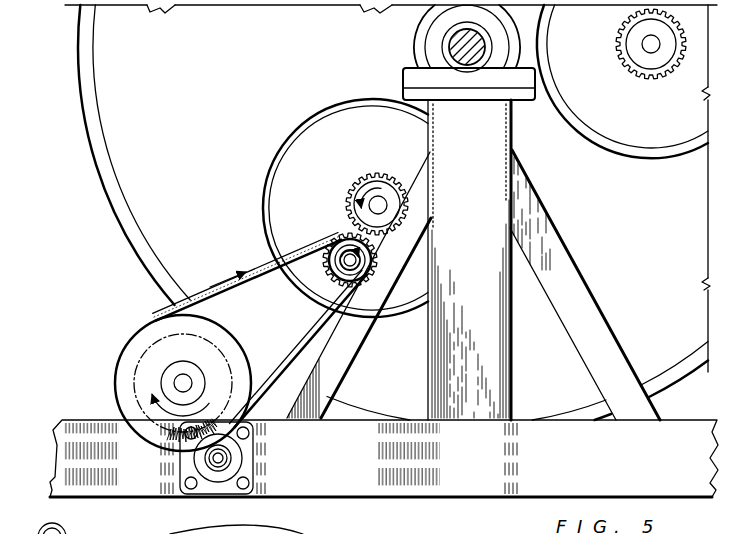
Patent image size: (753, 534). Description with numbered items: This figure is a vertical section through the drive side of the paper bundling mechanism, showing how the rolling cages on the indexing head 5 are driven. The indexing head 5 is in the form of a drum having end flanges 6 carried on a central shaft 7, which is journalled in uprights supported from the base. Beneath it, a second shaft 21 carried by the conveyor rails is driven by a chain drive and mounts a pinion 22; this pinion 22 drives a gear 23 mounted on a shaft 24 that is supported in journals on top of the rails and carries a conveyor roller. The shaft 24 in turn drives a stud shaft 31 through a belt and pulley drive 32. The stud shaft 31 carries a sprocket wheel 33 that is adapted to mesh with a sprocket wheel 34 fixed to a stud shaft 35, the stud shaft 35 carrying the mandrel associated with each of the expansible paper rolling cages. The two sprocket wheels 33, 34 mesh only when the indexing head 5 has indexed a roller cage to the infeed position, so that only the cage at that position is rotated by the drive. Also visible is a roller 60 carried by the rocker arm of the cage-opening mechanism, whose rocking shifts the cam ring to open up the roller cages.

The indexing head 5 is at (75, 113).
The end flanges 6 is at (97, 141).
The central shaft 7 is at (458, 48).
The second shaft 21 is at (222, 458).
The pinion 22 is at (190, 441).
The gear 23 is at (160, 343).
The shaft 24 is at (181, 384).
The stud shaft 31 is at (349, 262).
The belt and pulley drive 32 is at (262, 272).
The sprocket wheel 33 is at (340, 236).
The sprocket wheel 34 is at (651, 62).
The stud shaft 35 is at (381, 204).
The roller 60 is at (60, 528).